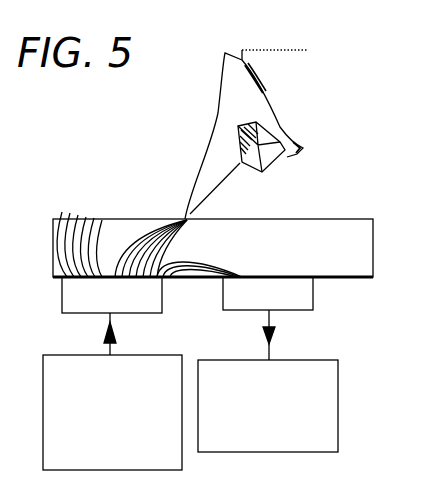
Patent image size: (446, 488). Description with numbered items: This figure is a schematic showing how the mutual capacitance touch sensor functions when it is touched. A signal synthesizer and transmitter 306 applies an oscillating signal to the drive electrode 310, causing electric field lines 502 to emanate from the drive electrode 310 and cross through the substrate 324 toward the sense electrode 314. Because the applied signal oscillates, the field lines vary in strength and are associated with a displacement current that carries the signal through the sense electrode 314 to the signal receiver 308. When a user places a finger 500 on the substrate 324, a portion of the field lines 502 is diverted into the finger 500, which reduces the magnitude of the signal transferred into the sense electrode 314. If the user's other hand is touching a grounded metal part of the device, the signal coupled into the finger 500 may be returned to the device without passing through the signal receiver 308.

The finger 500 is at (187, 184).
The field lines 502 is at (145, 242).
The substrate 324 is at (374, 218).
The drive electrodes 310 is at (62, 293).
The sense electrodes 314 is at (314, 296).
The signal synthesizer and transmitter 306 is at (43, 357).
The signal receiver 308 is at (339, 360).